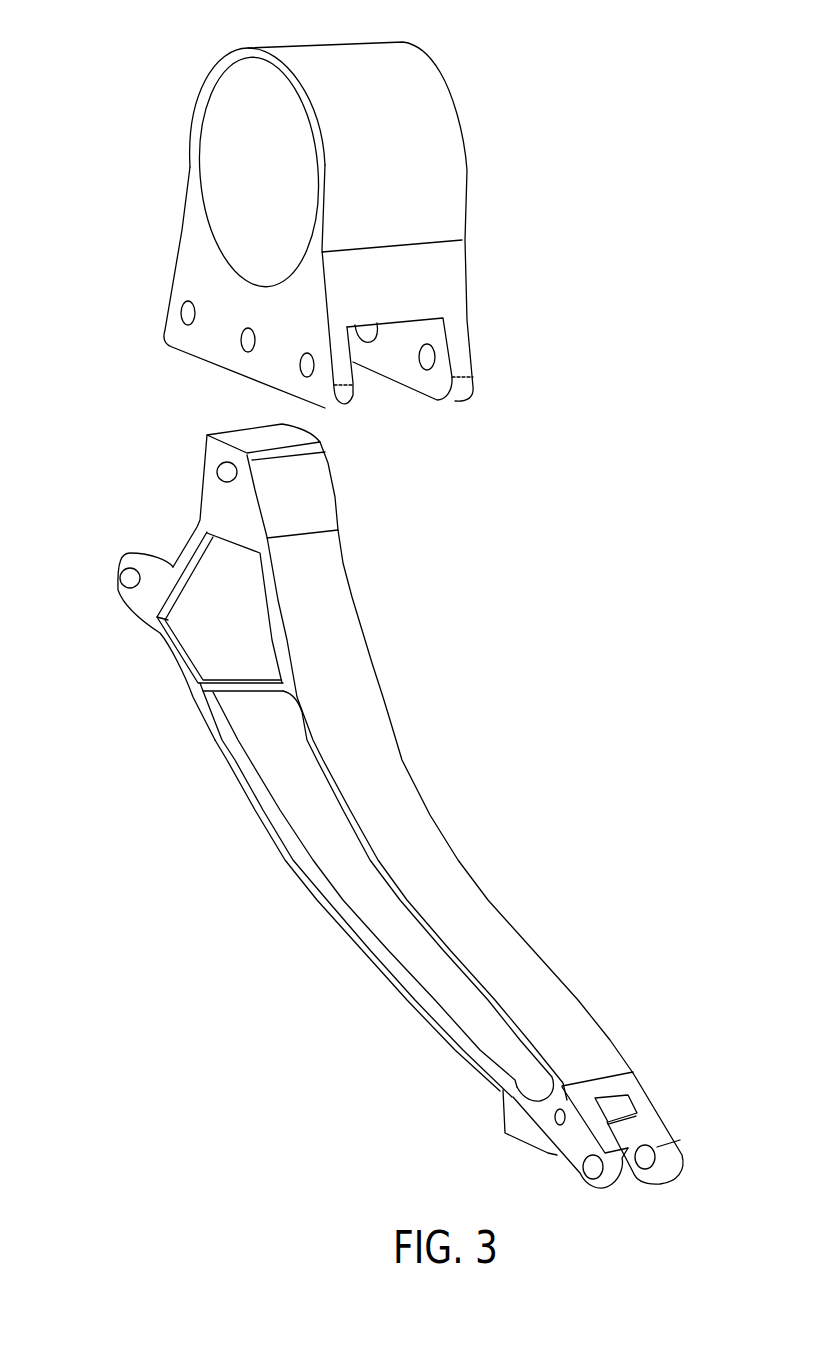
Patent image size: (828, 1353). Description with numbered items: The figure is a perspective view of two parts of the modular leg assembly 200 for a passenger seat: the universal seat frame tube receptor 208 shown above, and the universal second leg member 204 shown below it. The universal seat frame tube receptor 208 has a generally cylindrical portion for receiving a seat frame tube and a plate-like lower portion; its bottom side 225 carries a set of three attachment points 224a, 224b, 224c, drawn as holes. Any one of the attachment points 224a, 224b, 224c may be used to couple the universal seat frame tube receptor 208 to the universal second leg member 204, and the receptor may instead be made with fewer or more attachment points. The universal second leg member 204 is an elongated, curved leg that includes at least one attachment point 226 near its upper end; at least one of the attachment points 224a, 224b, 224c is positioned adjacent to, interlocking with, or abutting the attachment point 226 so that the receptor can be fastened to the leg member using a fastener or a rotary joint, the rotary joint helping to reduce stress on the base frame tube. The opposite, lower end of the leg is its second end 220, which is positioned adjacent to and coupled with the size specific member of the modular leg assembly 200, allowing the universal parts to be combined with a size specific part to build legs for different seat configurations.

The modular leg assembly 200 is at (118, 114).
The universal seat frame tube receptor 208 is at (417, 188).
The bottom side 225 is at (452, 327).
The attachment point 224a is at (182, 314).
The attachment point 224b is at (250, 342).
The attachment point 224c is at (308, 368).
The second end 220 is at (400, 787).
The attachment point 226 is at (217, 655).
The universal second leg member 204 is at (285, 795).